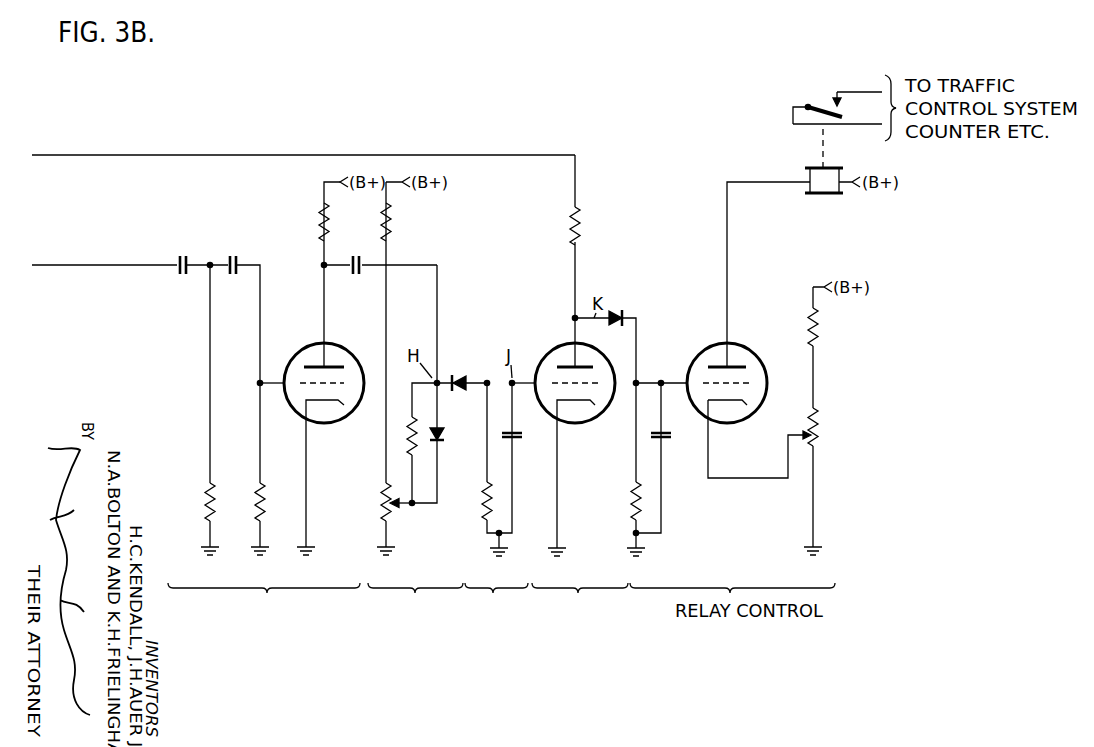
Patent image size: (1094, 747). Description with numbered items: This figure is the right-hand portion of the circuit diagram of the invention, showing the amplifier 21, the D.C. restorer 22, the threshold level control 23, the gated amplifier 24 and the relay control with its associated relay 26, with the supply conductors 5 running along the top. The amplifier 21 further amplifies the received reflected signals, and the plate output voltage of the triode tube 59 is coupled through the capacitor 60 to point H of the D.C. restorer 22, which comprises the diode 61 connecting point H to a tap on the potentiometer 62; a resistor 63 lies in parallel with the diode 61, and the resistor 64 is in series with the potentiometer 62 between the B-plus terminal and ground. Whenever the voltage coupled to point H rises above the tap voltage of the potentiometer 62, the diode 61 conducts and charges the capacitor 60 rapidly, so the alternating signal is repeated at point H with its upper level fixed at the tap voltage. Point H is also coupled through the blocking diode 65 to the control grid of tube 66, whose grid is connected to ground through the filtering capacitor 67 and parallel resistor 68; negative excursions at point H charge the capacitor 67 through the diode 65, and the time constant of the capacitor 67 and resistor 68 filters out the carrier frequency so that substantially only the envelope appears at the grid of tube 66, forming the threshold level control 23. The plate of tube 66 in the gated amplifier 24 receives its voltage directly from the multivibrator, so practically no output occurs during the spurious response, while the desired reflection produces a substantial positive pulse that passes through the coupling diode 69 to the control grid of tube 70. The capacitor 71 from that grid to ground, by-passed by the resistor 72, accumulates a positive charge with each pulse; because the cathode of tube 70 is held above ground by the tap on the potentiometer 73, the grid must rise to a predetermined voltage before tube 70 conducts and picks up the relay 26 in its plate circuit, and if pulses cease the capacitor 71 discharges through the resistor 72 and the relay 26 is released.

The conductor 5 is at (303, 146).
The amplifier 21 is at (264, 602).
The D.C. restorer 22 is at (414, 612).
The threshold level control 23 is at (493, 593).
The gated amplifier 24 is at (580, 613).
The relay 26 is at (823, 178).
The triode tube 59 is at (302, 352).
The capacitor 60 is at (356, 275).
The diode 61 is at (441, 434).
The potentiometer 62 is at (383, 519).
The resistor 63 is at (411, 431).
The resistor 64 is at (400, 330).
The blocking diode 65 is at (452, 376).
The tube 66 is at (553, 353).
The filtering capacitor 67 is at (516, 440).
The resistor 68 is at (477, 456).
The coupling diode 69 is at (617, 324).
The tube 70 is at (703, 353).
The capacitor 71 is at (667, 440).
The resistor 72 is at (626, 469).
The potentiometer 73 is at (824, 418).